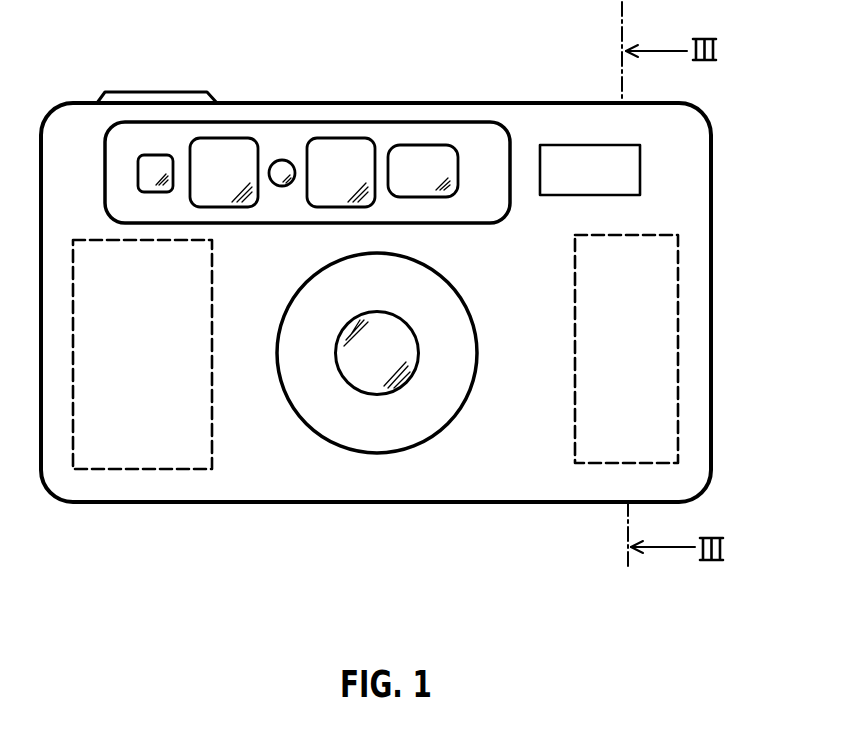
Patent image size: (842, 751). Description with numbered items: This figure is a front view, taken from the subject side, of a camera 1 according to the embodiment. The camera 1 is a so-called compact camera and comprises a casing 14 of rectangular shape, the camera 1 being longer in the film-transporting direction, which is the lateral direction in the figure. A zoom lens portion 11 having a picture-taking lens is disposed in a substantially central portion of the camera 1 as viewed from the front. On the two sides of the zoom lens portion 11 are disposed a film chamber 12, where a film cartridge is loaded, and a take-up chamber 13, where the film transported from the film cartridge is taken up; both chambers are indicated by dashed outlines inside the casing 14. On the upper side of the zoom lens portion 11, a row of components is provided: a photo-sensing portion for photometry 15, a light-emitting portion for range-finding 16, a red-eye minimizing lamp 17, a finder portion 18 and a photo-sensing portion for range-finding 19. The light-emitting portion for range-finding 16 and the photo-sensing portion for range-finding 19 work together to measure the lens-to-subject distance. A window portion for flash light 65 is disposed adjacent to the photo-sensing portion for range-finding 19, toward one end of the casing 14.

The camera 1 is at (535, 103).
The zoom lens portion 11 is at (380, 437).
The film chamber 12 is at (150, 469).
The take-up chamber 13 is at (677, 367).
The casing 14 is at (712, 268).
The photo-sensing portion for photometry 15 is at (160, 163).
The light-emitting portion for range-finding 16 is at (225, 155).
The red-eye minimizing lamp 17 is at (285, 163).
The finder portion 18 is at (342, 157).
The photo-sensing portion for range-finding 19 is at (422, 160).
The window portion for flash light 65 is at (632, 170).